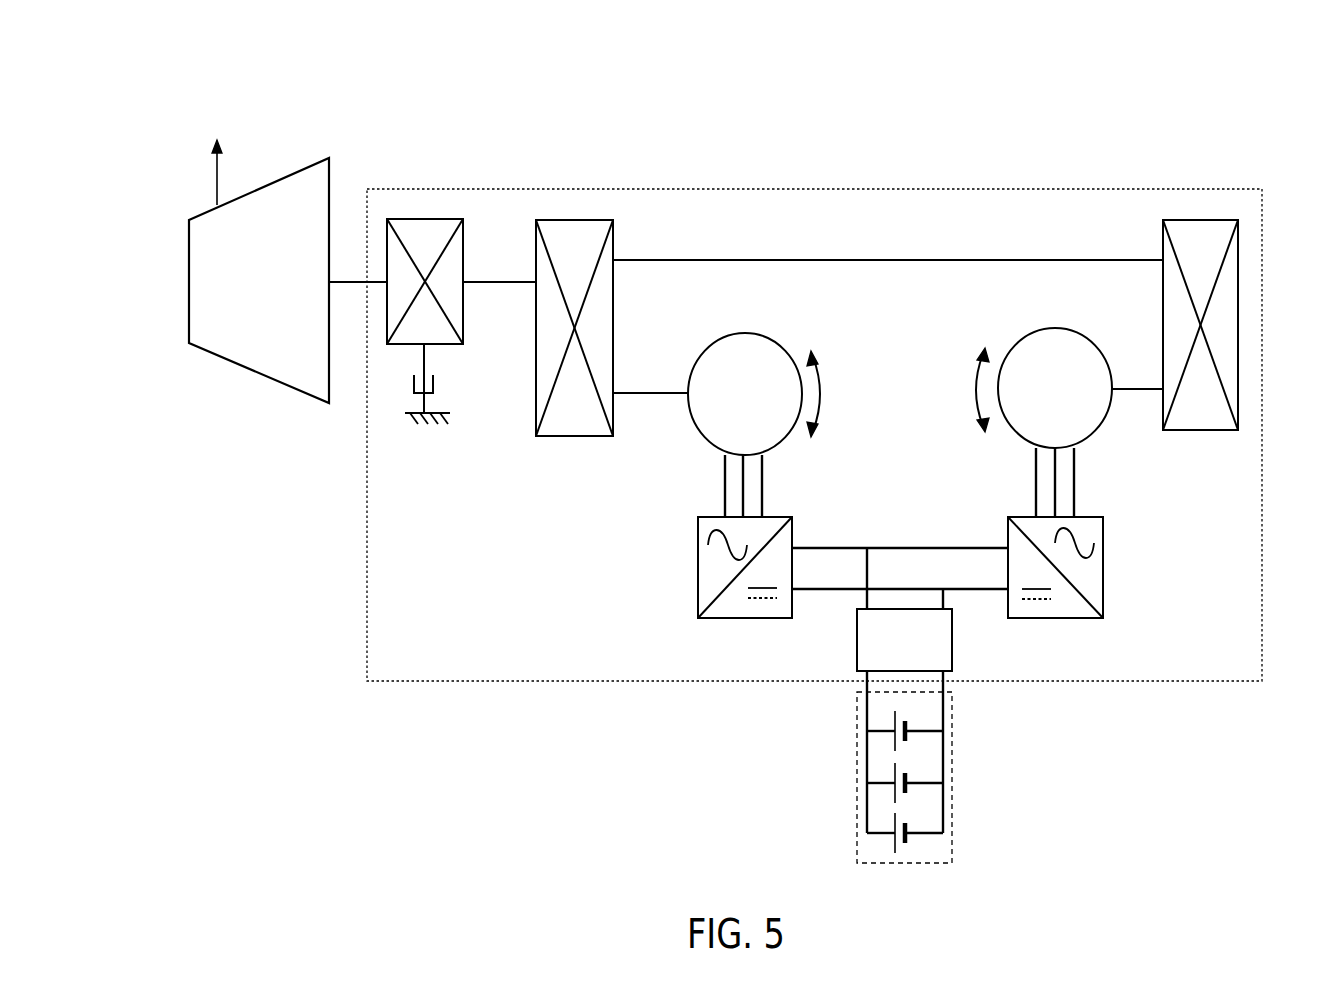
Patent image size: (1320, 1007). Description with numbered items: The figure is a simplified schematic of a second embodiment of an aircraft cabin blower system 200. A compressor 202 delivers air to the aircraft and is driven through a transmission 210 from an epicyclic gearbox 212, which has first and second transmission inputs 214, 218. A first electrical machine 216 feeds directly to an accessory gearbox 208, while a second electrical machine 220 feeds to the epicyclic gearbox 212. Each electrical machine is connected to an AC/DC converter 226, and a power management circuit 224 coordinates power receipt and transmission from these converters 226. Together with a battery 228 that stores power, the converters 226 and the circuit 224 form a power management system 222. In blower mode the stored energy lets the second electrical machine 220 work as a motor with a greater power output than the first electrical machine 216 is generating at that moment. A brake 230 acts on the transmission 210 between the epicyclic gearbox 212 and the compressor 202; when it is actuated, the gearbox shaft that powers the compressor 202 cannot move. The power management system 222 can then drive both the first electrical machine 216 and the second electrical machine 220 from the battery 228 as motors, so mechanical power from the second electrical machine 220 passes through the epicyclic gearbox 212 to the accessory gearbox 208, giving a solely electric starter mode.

The cabin blower system 200 is at (384, 96).
The compressor 202 is at (250, 372).
The accessory gearbox 208 is at (1207, 220).
The transmission 210 is at (506, 168).
The epicyclic gearbox 212 is at (570, 220).
The first transmission input 214 is at (705, 260).
The first electrical machine 216 is at (1058, 328).
The second transmission input 218 is at (662, 393).
The second electrical machine 220 is at (770, 333).
The power management system 222 is at (1021, 756).
The power management circuit 224 is at (857, 630).
The AC/DC converter 226 is at (720, 618).
The battery 228 is at (857, 775).
The brake 230 is at (413, 387).